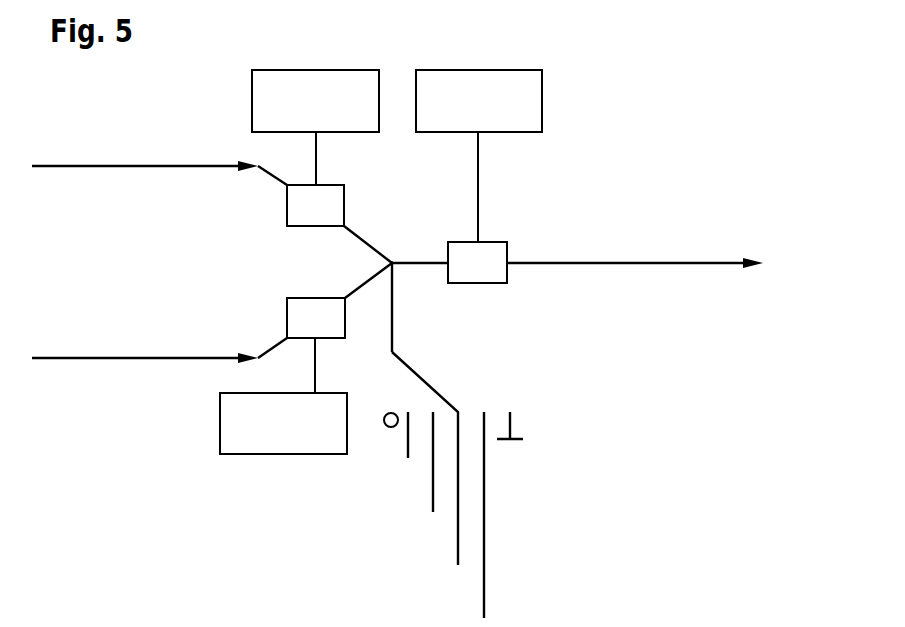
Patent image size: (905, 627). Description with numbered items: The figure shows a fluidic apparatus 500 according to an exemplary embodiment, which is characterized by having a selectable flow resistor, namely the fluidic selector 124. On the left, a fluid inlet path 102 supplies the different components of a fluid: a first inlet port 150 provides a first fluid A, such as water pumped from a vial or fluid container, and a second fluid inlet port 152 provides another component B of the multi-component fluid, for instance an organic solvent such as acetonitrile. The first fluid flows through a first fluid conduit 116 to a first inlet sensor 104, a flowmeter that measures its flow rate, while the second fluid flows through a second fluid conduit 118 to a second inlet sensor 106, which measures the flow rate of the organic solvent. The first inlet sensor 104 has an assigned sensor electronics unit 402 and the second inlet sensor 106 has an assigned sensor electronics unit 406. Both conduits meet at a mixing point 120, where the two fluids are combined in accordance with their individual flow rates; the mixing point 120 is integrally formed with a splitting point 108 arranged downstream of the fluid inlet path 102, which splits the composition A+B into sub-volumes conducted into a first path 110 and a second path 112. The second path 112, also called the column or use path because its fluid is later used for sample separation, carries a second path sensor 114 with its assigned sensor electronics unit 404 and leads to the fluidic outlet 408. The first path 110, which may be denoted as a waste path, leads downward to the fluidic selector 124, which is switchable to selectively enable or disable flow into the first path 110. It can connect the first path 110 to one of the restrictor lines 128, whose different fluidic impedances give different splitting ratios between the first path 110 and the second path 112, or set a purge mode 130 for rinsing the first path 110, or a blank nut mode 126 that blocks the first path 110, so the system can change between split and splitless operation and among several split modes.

The fluid inlet path 102 is at (157, 186).
The first inlet sensor 104 is at (287, 208).
The second inlet sensor 106 is at (287, 318).
The splitting point 108 is at (391, 258).
The first path 110 is at (392, 333).
The second path 112 is at (432, 262).
The second path sensor 114 is at (485, 283).
The first fluid conduit 116 is at (115, 166).
The second fluid conduit 118 is at (115, 360).
The mixing point 120 is at (392, 263).
The fluidic selector 124 is at (448, 371).
The blank nut mode 126 is at (520, 457).
The restrictor lines 128 is at (408, 513).
The purge mode 130 is at (381, 447).
The first inlet port 150 is at (32, 166).
The second fluid inlet port 152 is at (32, 360).
The sensor electronics unit 402 is at (252, 100).
The sensor electronics unit 404 is at (542, 100).
The sensor electronics unit 406 is at (283, 455).
The fluidic outlet 408 is at (750, 258).
The fluidic apparatus 500 is at (655, 142).